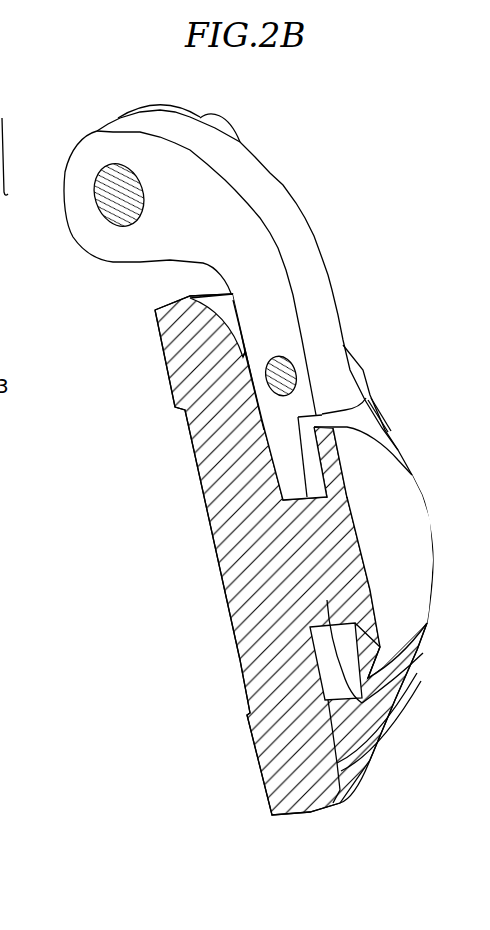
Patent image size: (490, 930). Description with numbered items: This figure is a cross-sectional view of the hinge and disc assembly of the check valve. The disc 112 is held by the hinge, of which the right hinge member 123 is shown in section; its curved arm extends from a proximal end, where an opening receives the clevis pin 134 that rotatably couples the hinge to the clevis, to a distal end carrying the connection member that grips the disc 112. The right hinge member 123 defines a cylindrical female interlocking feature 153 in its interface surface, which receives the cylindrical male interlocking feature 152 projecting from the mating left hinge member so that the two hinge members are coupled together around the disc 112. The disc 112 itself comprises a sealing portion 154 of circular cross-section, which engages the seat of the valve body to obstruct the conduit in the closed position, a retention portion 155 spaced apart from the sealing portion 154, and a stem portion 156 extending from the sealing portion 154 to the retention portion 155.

The disc 112 is at (210, 603).
The right hinge member 123 is at (320, 325).
The clevis pin 134 is at (118, 196).
The male interlocking feature 152 is at (268, 385).
The female interlocking feature 153 is at (292, 366).
The sealing portion 154 is at (197, 357).
The retention portion 155 is at (387, 523).
The stem portion 156 is at (340, 693).